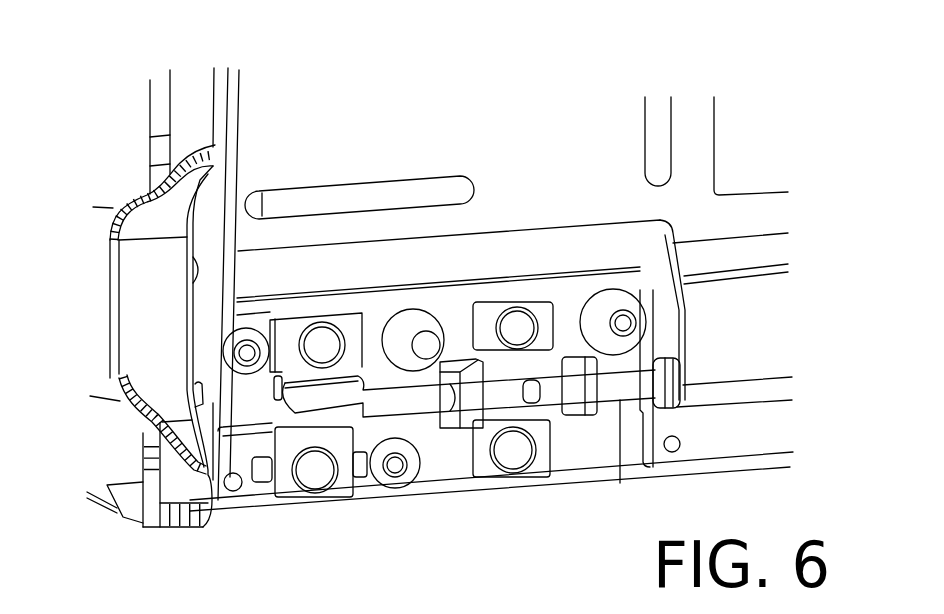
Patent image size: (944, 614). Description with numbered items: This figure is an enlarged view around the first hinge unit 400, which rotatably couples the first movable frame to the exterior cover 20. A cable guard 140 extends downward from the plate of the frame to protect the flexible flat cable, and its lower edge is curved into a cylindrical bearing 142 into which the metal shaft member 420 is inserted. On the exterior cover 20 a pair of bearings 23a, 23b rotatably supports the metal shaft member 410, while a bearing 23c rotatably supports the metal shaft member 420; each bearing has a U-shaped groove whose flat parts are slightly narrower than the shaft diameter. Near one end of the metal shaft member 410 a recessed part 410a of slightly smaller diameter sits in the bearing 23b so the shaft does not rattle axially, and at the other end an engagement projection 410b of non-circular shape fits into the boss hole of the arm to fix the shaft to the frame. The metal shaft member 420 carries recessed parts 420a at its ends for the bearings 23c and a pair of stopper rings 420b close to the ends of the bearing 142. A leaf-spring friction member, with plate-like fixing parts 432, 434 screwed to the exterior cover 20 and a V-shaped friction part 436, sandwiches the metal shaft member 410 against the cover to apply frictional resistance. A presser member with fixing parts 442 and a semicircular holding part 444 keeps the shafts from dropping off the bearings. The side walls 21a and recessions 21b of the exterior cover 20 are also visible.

The first hinge unit 400 is at (733, 58).
The cable guard 140 is at (753, 297).
The bearing 142 is at (748, 393).
The exterior cover 20 is at (667, 470).
The side wall 21a is at (183, 97).
The recession 21b is at (143, 382).
The engagement projection 410b is at (192, 403).
The bearing 23a is at (248, 443).
The bearing 23b is at (466, 375).
The bearing 23c is at (587, 387).
The fixing part 434 is at (292, 335).
The friction part 436 is at (347, 397).
The holding part 444 is at (492, 363).
The metal shaft member 420 is at (630, 447).
The recessed part 420a is at (587, 400).
The stopper ring 420b is at (688, 373).
The metal shaft member 410 is at (422, 407).
The recessed part 410a is at (467, 400).
The fixing part 432 is at (340, 487).
The fixing part 442 is at (540, 457).